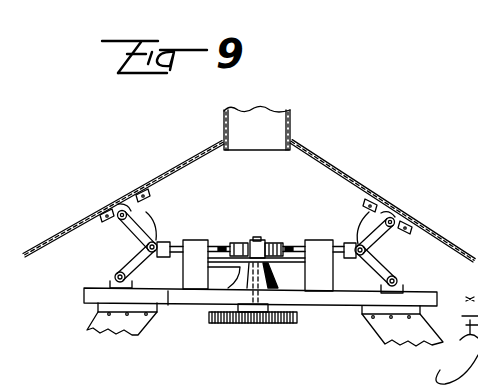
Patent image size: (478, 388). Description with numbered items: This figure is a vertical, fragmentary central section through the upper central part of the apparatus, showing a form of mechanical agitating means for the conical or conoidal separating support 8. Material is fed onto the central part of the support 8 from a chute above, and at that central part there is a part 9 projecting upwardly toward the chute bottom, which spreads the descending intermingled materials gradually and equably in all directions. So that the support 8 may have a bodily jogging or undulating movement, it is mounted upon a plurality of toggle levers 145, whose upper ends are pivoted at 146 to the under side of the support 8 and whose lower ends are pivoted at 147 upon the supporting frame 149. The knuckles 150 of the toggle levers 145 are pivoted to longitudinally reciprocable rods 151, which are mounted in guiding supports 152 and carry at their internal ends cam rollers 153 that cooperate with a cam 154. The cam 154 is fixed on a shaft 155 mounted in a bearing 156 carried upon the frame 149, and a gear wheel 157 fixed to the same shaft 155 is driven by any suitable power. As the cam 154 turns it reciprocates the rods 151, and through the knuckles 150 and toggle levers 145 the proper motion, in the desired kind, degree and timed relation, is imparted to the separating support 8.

The conical support 8 is at (163, 177).
The spreading part 9 is at (293, 125).
The toggle levers 145 is at (141, 228).
The upper pivot 146 is at (126, 211).
The lower pivot 147 is at (113, 277).
The supporting frame 149 is at (168, 295).
The knuckles 150 is at (147, 250).
The reciprocable rods 151 is at (217, 244).
The guiding supports 152 is at (197, 240).
The cam rollers 153 is at (226, 250).
The cam 154 is at (268, 240).
The shaft 155 is at (257, 237).
The bearing 156 is at (212, 268).
The gear wheel 157 is at (297, 318).